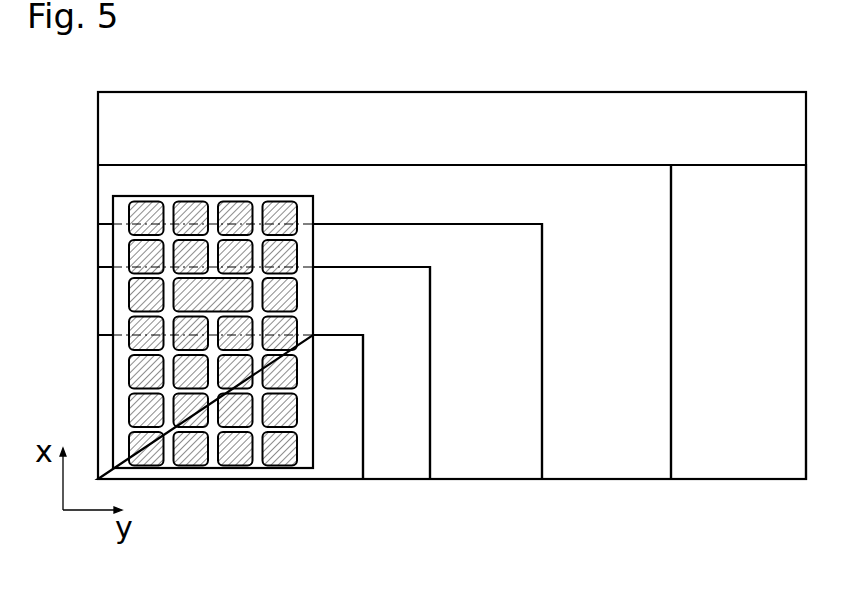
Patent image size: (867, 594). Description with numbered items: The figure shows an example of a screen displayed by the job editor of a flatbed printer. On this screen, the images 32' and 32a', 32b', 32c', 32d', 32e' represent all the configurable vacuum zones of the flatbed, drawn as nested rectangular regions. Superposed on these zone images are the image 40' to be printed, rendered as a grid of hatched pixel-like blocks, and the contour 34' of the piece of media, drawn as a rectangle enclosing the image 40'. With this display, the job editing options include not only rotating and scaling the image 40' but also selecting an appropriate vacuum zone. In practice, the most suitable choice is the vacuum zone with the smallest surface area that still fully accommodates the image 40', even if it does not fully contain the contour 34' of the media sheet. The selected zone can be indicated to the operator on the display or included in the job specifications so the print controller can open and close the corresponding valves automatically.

The image of vacuum zone 32' is at (452, 252).
The image of vacuum zone 32a' is at (744, 355).
The image of vacuum zone 32b' is at (408, 355).
The image of vacuum zone 32c' is at (343, 384).
The image of vacuum zone 32d' is at (289, 406).
The image of vacuum zone 32e' is at (254, 450).
The contour of the piece of media 34' is at (213, 380).
The image to be printed 40' is at (213, 374).